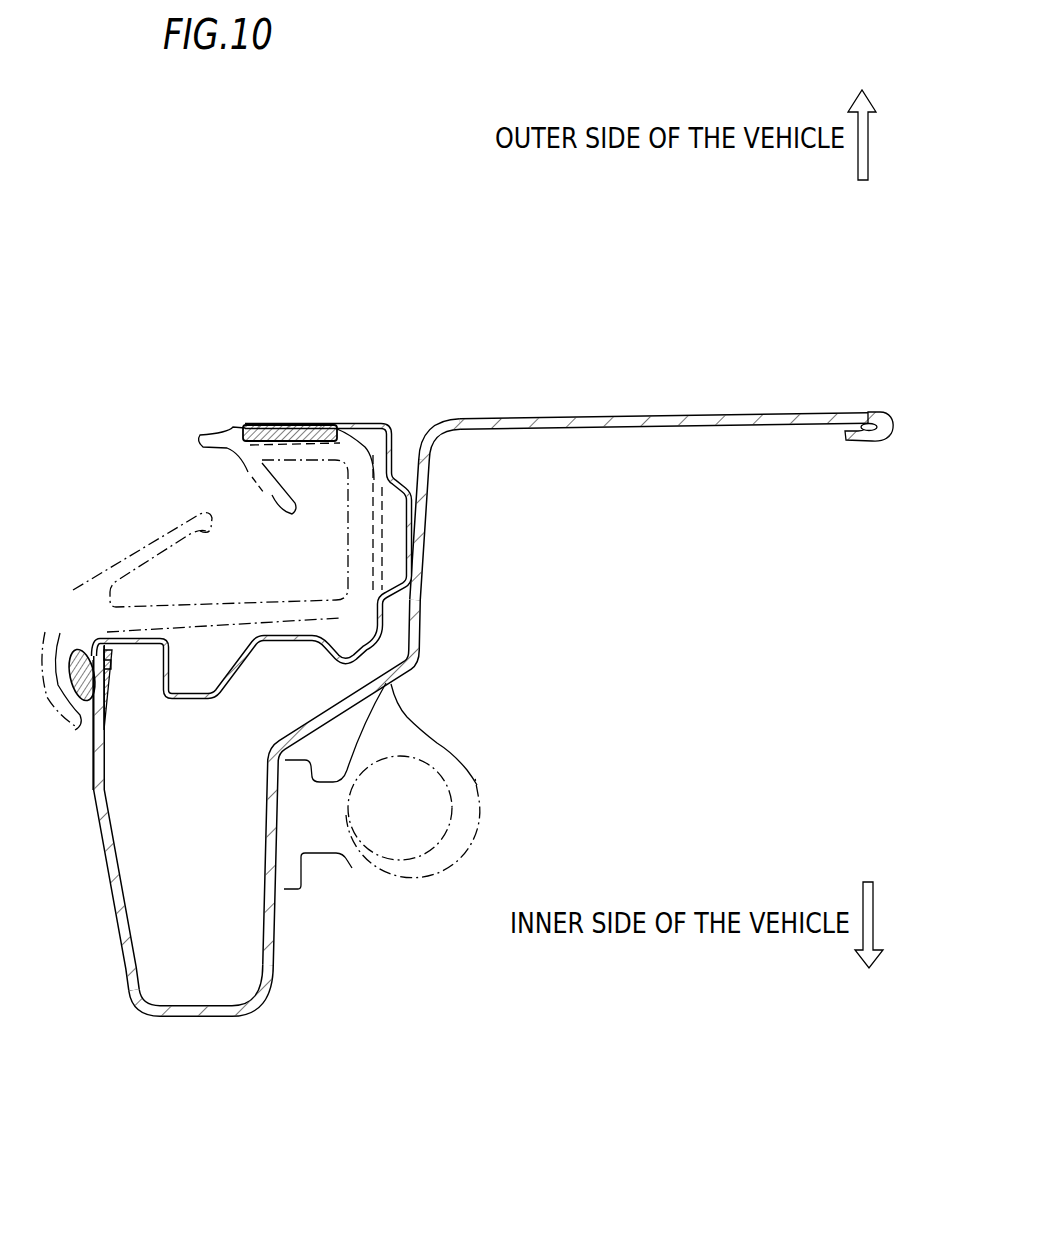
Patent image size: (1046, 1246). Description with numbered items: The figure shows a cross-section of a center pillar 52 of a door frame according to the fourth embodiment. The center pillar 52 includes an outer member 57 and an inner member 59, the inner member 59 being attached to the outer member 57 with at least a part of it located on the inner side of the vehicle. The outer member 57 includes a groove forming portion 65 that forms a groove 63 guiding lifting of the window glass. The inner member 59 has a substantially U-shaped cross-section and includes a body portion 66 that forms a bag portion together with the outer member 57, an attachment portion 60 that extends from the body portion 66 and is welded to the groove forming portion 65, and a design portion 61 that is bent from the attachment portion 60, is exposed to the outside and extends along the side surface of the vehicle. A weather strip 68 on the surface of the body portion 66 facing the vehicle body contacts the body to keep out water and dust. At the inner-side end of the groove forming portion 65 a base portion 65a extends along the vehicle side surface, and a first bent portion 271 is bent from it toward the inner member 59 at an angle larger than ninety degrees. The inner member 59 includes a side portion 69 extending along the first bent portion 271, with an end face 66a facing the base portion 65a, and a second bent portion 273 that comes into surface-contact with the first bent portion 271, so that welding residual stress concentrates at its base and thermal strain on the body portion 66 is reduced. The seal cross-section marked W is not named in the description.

The center pillar 52 is at (616, 334).
The outer member 57 is at (399, 411).
The inner member 59 is at (283, 978).
The attachment portion 60 is at (419, 513).
The design portion 61 is at (740, 413).
The groove 63 is at (232, 522).
The groove forming portion 65 is at (279, 636).
The base portion 65a is at (352, 630).
The body portion 66 is at (211, 1018).
The end face 66a is at (89, 646).
The weather strip 68 is at (480, 817).
The side portion 69 is at (104, 766).
The first bent portion 271 is at (78, 648).
The second bent portion 273 is at (97, 752).
The seal cross-section W is at (60, 636).